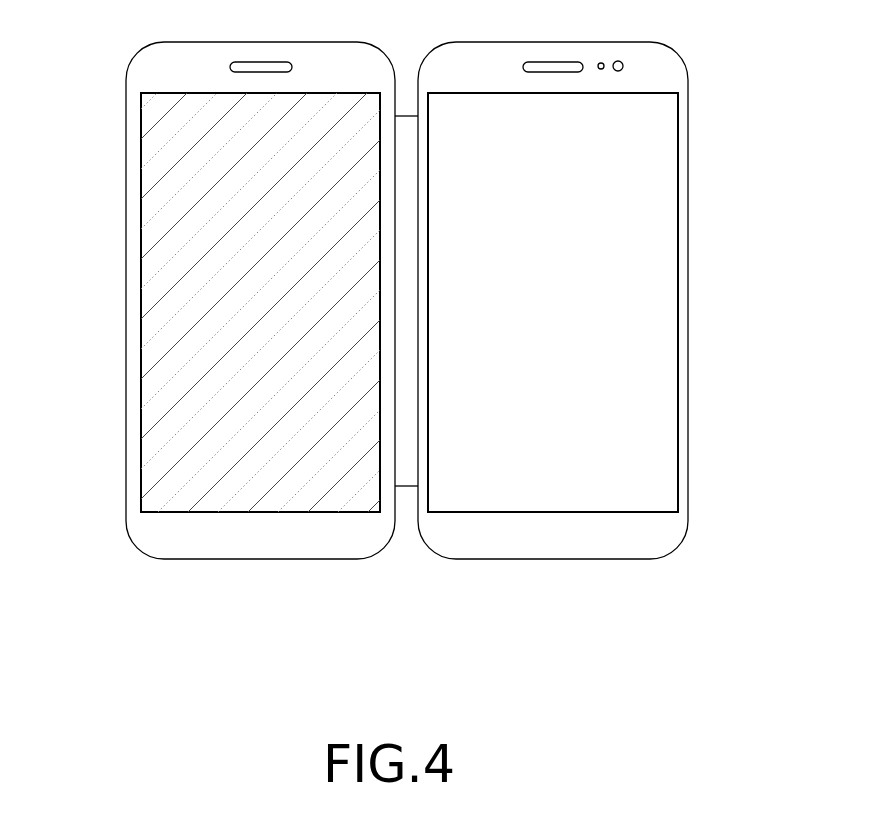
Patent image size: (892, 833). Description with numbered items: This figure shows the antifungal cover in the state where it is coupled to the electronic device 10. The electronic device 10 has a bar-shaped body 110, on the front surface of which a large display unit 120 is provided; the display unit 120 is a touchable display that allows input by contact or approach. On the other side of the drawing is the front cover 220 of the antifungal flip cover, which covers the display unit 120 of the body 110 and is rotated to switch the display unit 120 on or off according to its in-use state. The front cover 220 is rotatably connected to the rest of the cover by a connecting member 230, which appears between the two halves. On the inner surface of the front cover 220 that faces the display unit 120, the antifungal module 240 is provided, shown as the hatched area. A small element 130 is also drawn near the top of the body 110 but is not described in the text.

The electronic device 10 is at (81, 54).
The body 110 is at (688, 253).
The display unit 120 is at (658, 357).
The camera 130 is at (623, 68).
The front cover 220 is at (263, 547).
The connecting member 230 is at (407, 475).
The antifungal module 240 is at (157, 303).